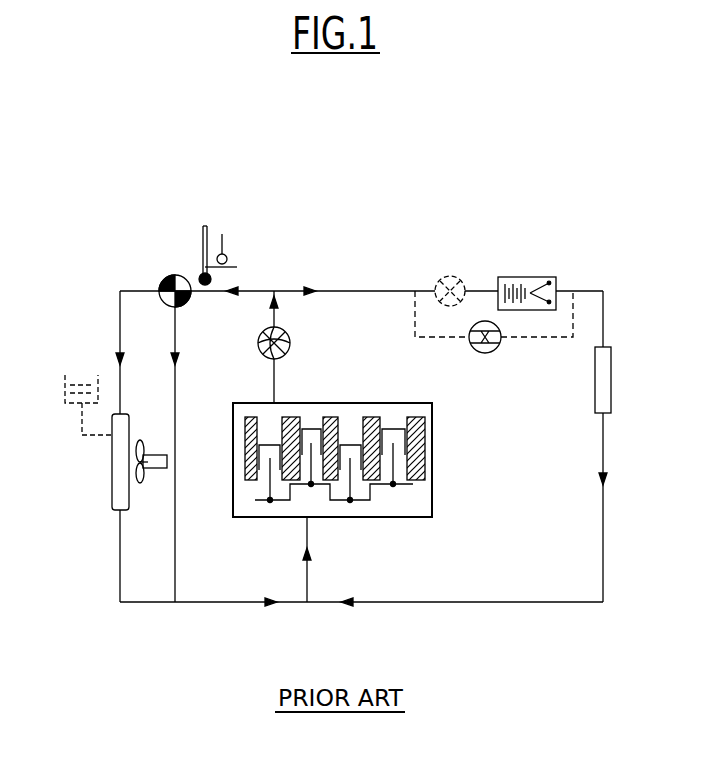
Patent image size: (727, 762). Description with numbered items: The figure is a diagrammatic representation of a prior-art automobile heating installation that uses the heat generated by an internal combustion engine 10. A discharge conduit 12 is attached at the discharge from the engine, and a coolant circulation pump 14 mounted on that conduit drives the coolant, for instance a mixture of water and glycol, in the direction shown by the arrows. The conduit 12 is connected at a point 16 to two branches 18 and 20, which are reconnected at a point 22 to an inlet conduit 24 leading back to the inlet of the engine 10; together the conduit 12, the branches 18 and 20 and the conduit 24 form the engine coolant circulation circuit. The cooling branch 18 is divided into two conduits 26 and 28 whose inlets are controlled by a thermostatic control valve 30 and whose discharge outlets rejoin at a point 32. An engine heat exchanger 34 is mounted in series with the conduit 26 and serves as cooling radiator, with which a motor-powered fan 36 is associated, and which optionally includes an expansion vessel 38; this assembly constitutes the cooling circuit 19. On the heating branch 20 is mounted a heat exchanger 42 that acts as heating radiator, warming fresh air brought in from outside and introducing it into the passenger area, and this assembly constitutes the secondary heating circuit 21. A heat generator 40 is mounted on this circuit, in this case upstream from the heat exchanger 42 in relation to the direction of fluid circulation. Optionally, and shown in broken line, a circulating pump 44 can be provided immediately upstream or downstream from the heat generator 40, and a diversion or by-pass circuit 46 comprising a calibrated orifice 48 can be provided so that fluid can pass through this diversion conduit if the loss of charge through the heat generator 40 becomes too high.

The internal combustion engine 10 is at (432, 517).
The discharge conduit 12 is at (275, 380).
The coolant circulation pump 14 is at (290, 341).
The connection point 16 is at (276, 289).
The cooling branch 18 is at (257, 289).
The cooling circuit 19 is at (218, 398).
The heating branch 20 is at (372, 290).
The secondary heating circuit 21 is at (532, 481).
The reconnection point 22 is at (307, 602).
The inlet conduit 24 is at (308, 570).
The conduit 26 is at (120, 310).
The conduit 28 is at (177, 337).
The thermostatic control valve 30 is at (168, 276).
The discharge connection point 32 is at (175, 602).
The engine heat exchanger 34 is at (112, 490).
The motor-powered fan 36 is at (156, 470).
The expansion vessel 38 is at (64, 404).
The heat generator 40 is at (536, 277).
The heat exchanger 42 is at (612, 384).
The circulating pump 44 is at (452, 277).
The by-pass circuit 46 is at (541, 340).
The calibrated orifice 48 is at (484, 353).